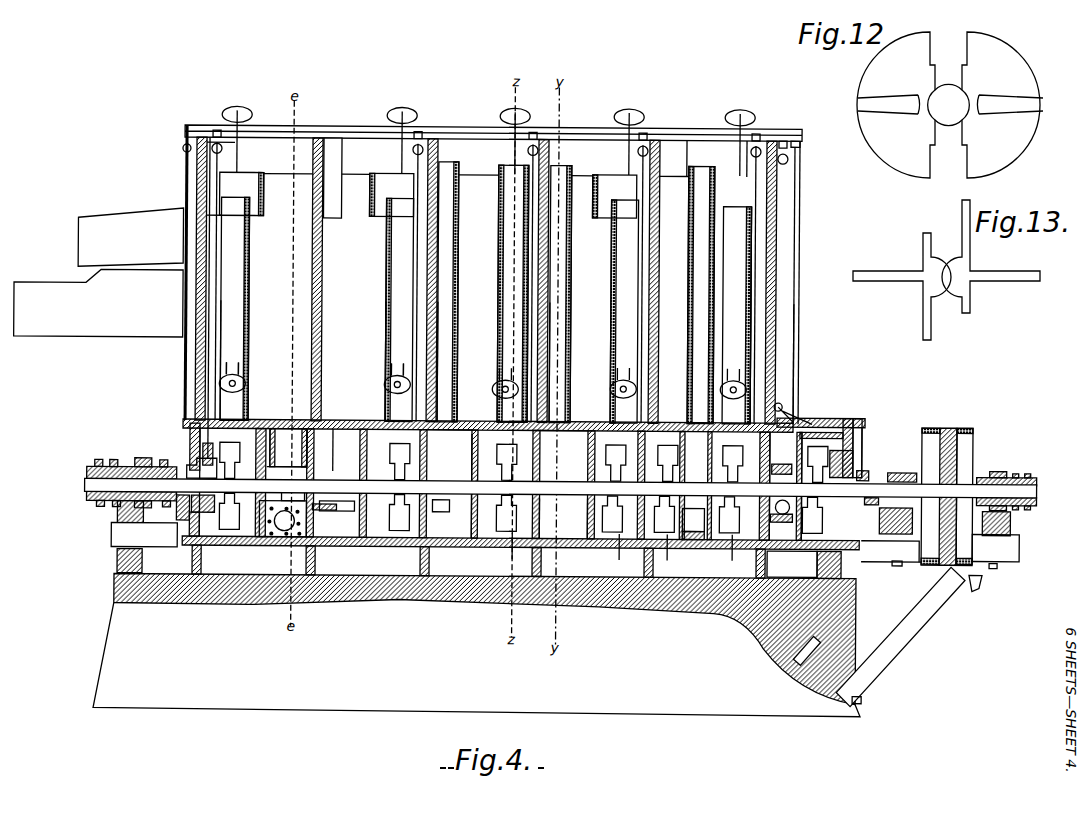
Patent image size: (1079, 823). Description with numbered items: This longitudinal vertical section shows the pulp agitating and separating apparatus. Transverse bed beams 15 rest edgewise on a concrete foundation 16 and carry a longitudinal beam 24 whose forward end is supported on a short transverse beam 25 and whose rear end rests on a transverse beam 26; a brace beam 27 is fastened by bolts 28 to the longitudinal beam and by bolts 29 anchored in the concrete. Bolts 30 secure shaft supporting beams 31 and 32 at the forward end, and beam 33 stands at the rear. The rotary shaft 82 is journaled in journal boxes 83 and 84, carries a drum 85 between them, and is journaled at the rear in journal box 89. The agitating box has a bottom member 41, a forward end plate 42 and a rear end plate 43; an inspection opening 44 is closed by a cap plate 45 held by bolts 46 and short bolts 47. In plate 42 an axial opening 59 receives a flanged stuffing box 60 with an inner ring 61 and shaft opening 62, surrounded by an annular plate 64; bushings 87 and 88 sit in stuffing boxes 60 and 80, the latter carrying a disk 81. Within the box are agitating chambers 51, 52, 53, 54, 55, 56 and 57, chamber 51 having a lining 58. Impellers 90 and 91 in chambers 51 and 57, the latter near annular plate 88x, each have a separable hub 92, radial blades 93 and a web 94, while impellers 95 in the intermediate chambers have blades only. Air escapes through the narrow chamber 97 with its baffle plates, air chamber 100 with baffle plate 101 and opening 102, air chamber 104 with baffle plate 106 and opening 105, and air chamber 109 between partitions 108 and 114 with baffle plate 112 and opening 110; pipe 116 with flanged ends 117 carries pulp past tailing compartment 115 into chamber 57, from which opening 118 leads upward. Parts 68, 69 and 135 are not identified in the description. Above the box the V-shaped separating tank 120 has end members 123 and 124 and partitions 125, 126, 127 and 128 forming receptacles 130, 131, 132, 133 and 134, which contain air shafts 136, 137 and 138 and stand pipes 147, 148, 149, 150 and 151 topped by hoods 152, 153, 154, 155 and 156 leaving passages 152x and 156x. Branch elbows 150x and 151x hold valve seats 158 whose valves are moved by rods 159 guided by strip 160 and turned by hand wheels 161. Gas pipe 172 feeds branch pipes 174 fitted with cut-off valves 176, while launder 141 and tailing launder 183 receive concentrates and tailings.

In FIG. 4, the transverse bed beams 15 is at (212, 568).
In FIG. 4, the concrete foundation 16 is at (474, 645).
In FIG. 4, the longitudinal beam 24 is at (1000, 564).
In FIG. 4, the short transverse beam 25 is at (842, 568).
In FIG. 4, the transverse beam 26 is at (118, 568).
In FIG. 4, the brace beam 27 is at (905, 628).
In FIG. 4, the bolts 28 is at (978, 588).
In FIG. 4, the anchor bolts 29 is at (864, 695).
In FIG. 4, the bolts 30 is at (893, 561).
In FIG. 4, the shaft supporting beam 31 is at (1012, 522).
In FIG. 4, the shaft supporting beam 32 is at (891, 576).
In FIG. 4, the shaft supporting beam 33 is at (118, 518).
In FIG. 4, the bottom member 41 is at (520, 558).
In FIG. 4, the forward end member 42 is at (855, 440).
In FIG. 4, the rear end member 43 is at (190, 435).
In FIG. 4, the inspection opening 44 is at (813, 428).
In FIG. 4, the cap plate 45 is at (843, 414).
In FIG. 4, the bolts 46 is at (612, 392).
In FIG. 4, the short bolts 47 is at (785, 404).
In FIG. 4, the pulp agitating chamber 51 is at (793, 486).
In FIG. 4, the pulp agitating chamber 52 is at (745, 449).
In FIG. 4, the pulp agitating chamber 53 is at (676, 449).
In FIG. 4, the pulp agitating chamber 54 is at (614, 447).
In FIG. 4, the pulp agitating chamber 55 is at (516, 445).
In FIG. 4, the pulp agitating chamber 56 is at (408, 444).
In FIG. 4, the pulp agitating chamber 57 is at (239, 511).
In FIG. 4, the lining 58 is at (792, 565).
In FIG. 4, the axial opening 59 is at (850, 475).
In FIG. 4, the stuffing box 60 is at (880, 518).
In FIG. 4, the inner ring 61 is at (897, 477).
In FIG. 4, the shaft opening 62 is at (785, 490).
In FIG. 4, the annular plate 64 is at (862, 447).
In FIG. 4, the spacer block 68 is at (860, 423).
In FIG. 4, the collar 69 is at (767, 520).
In FIG. 4, the stuffing box 80 is at (190, 502).
In FIG. 4, the disk 81 is at (190, 527).
In FIG. 4, the rotary shaft 82 is at (963, 491).
In FIG. 4, the journal box 83 is at (922, 470).
In FIG. 4, the journal box 84 is at (998, 471).
In FIG. 4, the drum 85 is at (960, 435).
In FIG. 4, the bushing 87 is at (872, 500).
In FIG. 4, the bushing 88 is at (187, 470).
In FIG. 4, the annular plate 88x is at (203, 453).
In FIG. 4, the journal box 89 is at (125, 467).
In FIG. 4, the pulp impeller 90 is at (865, 538).
In FIG. 4, the pulp impeller 91 is at (238, 455).
In FIG. 12, the separable hub 92 is at (948, 104).
In FIG. 12, the radial blades 93 is at (918, 165).
In FIG. 12, the web 94 is at (998, 110).
In FIG. 4, the impellers 95 is at (623, 556).
In FIG. 13, the impellers 95 is at (946, 270).
In FIG. 4, the air liberating chamber 97 is at (698, 498).
In FIG. 4, the air chamber 100 is at (564, 519).
In FIG. 4, the horizontal baffle plate 101 is at (545, 530).
In FIG. 4, the opening 102 is at (572, 470).
In FIG. 4, the air chamber 104 is at (462, 466).
In FIG. 4, the opening 105 is at (449, 440).
In FIG. 4, the baffle plate 106 is at (448, 510).
In FIG. 4, the partition 108 is at (307, 527).
In FIG. 4, the air chamber 109 is at (322, 450).
In FIG. 4, the opening 110 is at (336, 450).
In FIG. 4, the horizontal baffle plate 112 is at (325, 509).
In FIG. 4, the partition 114 is at (288, 448).
In FIG. 4, the tailing compartment 115 is at (302, 460).
In FIG. 4, the pipe 116 is at (287, 473).
In FIG. 4, the flanged ends 117 is at (293, 496).
In FIG. 4, the opening 118 is at (227, 428).
In FIG. 4, the separating tank 120 is at (222, 355).
In FIG. 4, the forward end member 123 is at (795, 305).
In FIG. 4, the rear end member 124 is at (197, 370).
In FIG. 4, the transverse partition 125 is at (655, 142).
In FIG. 4, the transverse partition 126 is at (550, 142).
In FIG. 4, the transverse partition 127 is at (435, 142).
In FIG. 4, the transverse partition 128 is at (322, 135).
In FIG. 4, the separating receptacle 130 is at (687, 294).
In FIG. 4, the separating receptacle 131 is at (575, 363).
In FIG. 4, the separating receptacle 132 is at (463, 362).
In FIG. 4, the separating receptacle 133 is at (366, 361).
In FIG. 4, the separating receptacle 134 is at (254, 360).
In FIG. 4, the upper bay 135 is at (691, 158).
In FIG. 4, the air shaft 136 is at (585, 161).
In FIG. 4, the air shaft 137 is at (468, 284).
In FIG. 4, the air shaft 138 is at (350, 178).
In FIG. 4, the concentrate launder 141 is at (115, 223).
In FIG. 4, the stand pipe 147 is at (757, 260).
In FIG. 4, the stand pipe 148 is at (610, 262).
In FIG. 4, the stand pipe 149 is at (497, 262).
In FIG. 4, the stand pipe 150 is at (385, 263).
In FIG. 4, the branch elbow 150x is at (390, 370).
In FIG. 4, the stand pipe 151 is at (248, 285).
In FIG. 4, the branch elbow 151x is at (240, 368).
In FIG. 4, the box frame 152 is at (757, 202).
In FIG. 4, the passage 152x is at (752, 218).
In FIG. 4, the box frame 153 is at (572, 232).
In FIG. 4, the box frame 154 is at (497, 235).
In FIG. 4, the box frame 155 is at (385, 218).
In FIG. 4, the box frame 156 is at (262, 207).
In FIG. 4, the passage 156x is at (250, 215).
In FIG. 4, the valve seat 158 is at (733, 368).
In FIG. 4, the valve rod 159 is at (746, 160).
In FIG. 4, the guiding strip 160 is at (305, 128).
In FIG. 4, the hand wheel 161 is at (236, 106).
In FIG. 4, the longitudinal gas pipe 172 is at (688, 143).
In FIG. 4, the branch pipe 174 is at (641, 165).
In FIG. 4, the cut-off valve 176 is at (222, 148).
In FIG. 4, the tailing launder 183 is at (98, 327).